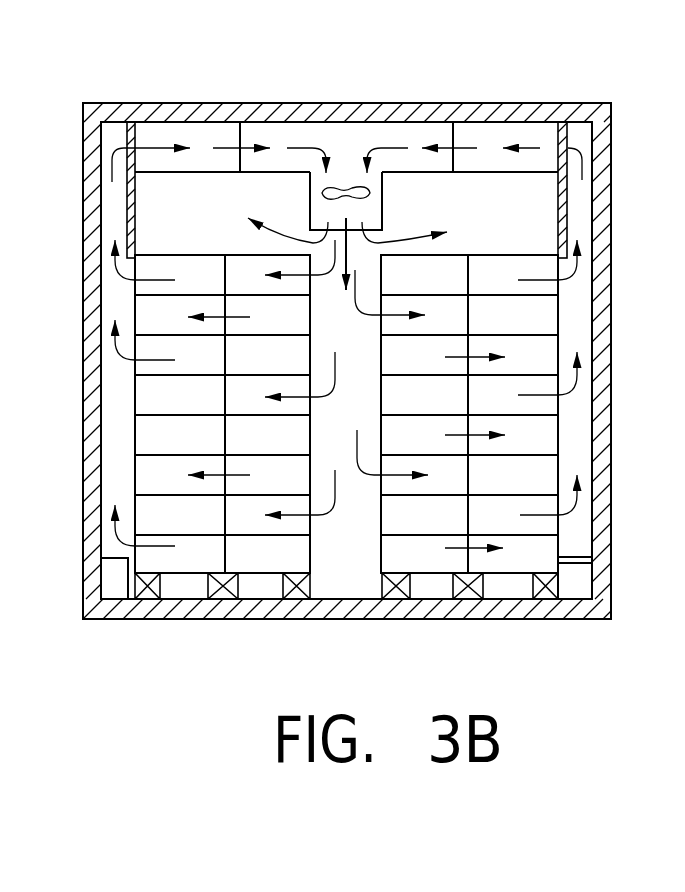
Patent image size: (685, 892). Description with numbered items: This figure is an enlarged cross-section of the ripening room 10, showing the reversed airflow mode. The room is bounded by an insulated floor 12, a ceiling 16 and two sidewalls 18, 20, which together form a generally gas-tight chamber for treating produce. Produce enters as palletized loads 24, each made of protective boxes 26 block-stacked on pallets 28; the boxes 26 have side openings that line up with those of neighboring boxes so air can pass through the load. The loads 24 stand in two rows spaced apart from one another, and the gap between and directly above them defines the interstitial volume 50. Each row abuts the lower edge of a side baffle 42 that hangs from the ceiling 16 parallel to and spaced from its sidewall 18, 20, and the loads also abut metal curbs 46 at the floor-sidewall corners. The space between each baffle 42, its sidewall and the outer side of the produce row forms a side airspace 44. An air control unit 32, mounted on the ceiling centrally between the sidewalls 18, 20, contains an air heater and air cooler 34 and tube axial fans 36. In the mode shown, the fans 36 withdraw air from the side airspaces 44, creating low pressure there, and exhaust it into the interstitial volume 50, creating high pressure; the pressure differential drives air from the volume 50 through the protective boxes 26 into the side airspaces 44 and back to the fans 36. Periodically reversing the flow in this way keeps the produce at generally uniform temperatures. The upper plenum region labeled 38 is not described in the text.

The ripening room 10 is at (613, 79).
The floor 12 is at (452, 609).
The ceiling 16 is at (463, 112).
The sidewall 18 is at (88, 369).
The sidewall 20 is at (601, 363).
The palletized load 24 is at (124, 493).
The protective box 26 is at (183, 562).
The pallet 28 is at (224, 588).
The air control unit 32 is at (355, 200).
The air heater and air cooler 34 is at (391, 158).
The tube axial fan 36 is at (383, 222).
The upper air plenum 38 is at (517, 127).
The side baffle 42 is at (136, 216).
The side airspace 44 is at (577, 447).
The metal curb 46 is at (582, 586).
The interstitial airspace or volume 50 is at (338, 598).